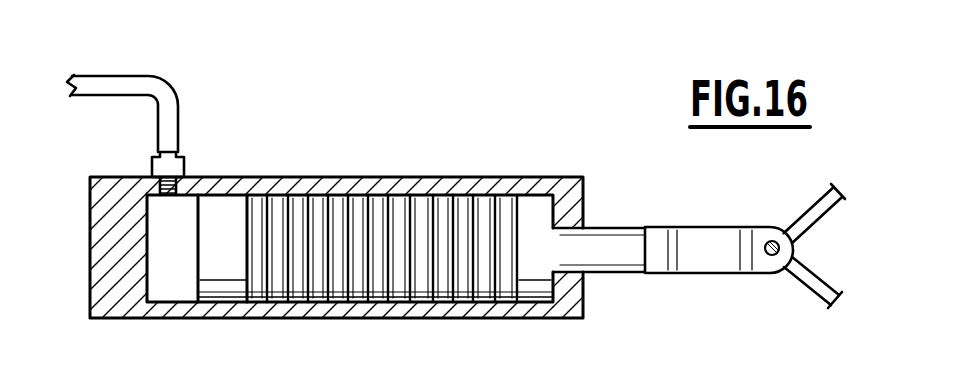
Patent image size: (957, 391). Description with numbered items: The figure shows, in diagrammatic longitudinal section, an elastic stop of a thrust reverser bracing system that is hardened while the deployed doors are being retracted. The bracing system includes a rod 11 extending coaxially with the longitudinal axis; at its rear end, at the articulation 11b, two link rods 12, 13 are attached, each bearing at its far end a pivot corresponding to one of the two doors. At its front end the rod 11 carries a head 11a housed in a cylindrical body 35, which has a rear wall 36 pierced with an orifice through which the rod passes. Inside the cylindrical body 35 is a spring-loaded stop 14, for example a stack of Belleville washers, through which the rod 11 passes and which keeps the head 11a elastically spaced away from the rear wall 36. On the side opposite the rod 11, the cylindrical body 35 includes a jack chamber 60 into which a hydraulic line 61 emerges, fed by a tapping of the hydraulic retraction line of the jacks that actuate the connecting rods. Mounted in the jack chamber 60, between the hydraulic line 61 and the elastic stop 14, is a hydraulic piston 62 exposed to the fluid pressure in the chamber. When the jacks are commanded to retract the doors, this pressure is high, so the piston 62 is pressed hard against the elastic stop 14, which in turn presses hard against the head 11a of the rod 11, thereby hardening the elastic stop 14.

The rod 11 is at (680, 242).
The head 11a is at (531, 218).
The articulation 11b is at (772, 256).
The link rod 12 is at (813, 211).
The link rod 13 is at (806, 293).
The spring-loaded stop 14 is at (403, 284).
The cylindrical body 35 is at (302, 300).
The rear wall 36 is at (568, 288).
The jack chamber 60 is at (160, 243).
The hydraulic line 61 is at (96, 96).
The hydraulic piston 62 is at (223, 284).